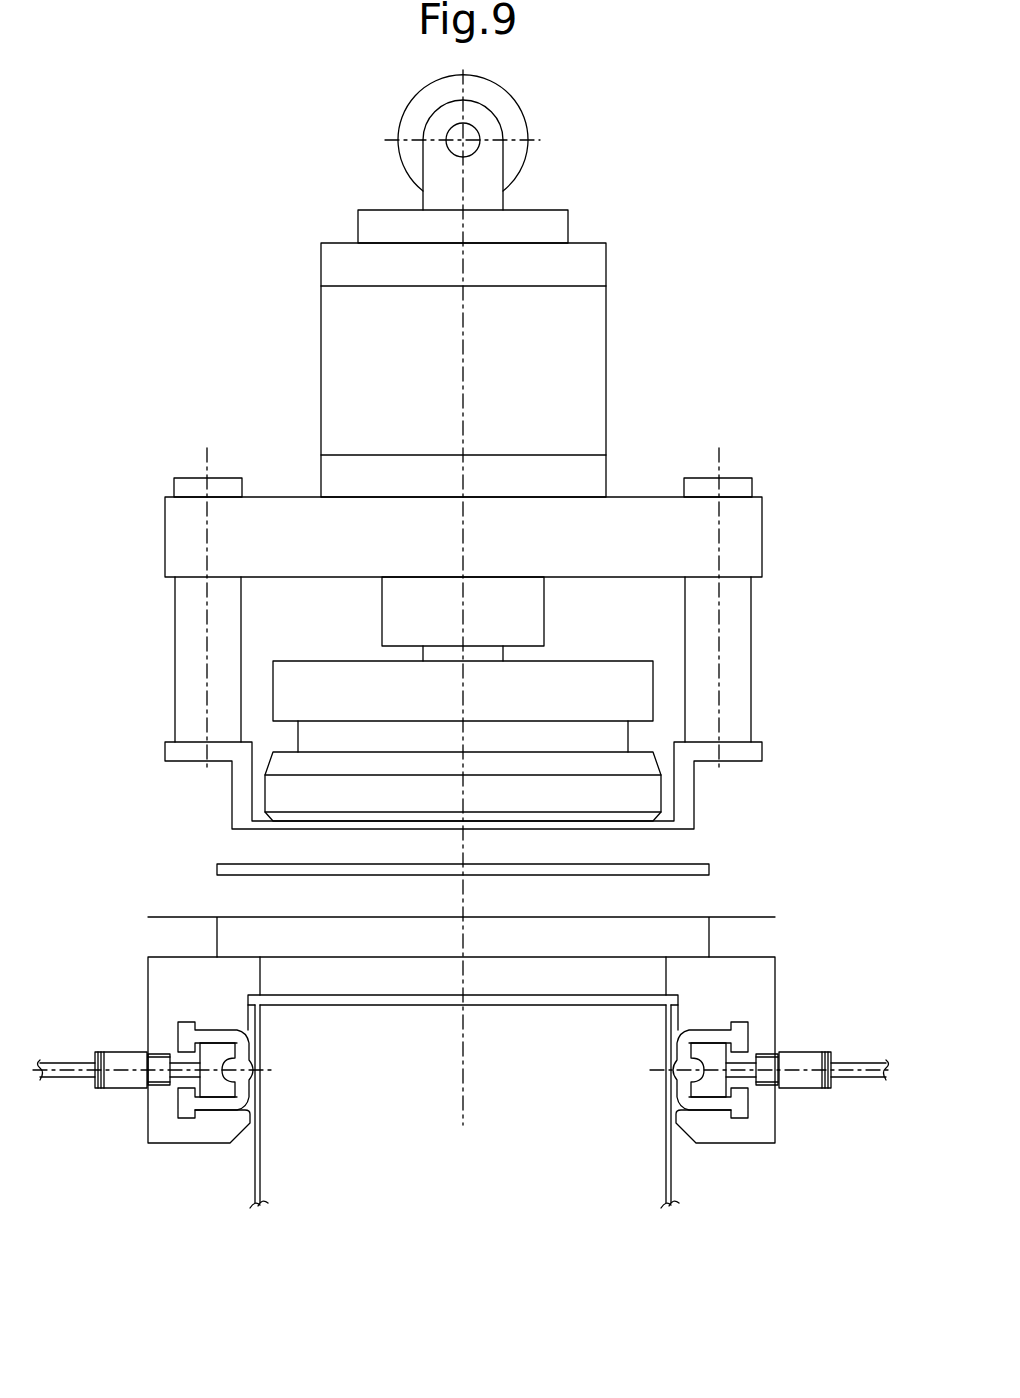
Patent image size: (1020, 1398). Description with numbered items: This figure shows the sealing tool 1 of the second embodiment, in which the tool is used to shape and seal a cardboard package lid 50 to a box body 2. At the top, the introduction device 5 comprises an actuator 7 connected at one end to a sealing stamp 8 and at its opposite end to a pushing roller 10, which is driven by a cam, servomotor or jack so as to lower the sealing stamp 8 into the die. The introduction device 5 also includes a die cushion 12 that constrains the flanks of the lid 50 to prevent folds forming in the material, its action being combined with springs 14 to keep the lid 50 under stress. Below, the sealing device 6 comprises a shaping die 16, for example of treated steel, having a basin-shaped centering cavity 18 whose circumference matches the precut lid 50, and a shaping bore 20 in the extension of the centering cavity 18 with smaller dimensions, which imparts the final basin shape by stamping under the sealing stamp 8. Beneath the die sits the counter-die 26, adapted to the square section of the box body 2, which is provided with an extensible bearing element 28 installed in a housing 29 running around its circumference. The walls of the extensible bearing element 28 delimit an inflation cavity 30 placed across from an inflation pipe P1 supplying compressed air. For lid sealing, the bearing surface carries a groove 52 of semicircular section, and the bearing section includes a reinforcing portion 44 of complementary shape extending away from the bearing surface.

The sealing tool 1 is at (263, 151).
The pushing roller 10 is at (423, 108).
The introduction device 5 is at (679, 258).
The actuator 7 is at (345, 335).
The springs 14 is at (187, 647).
The sealing stamp 8 is at (598, 795).
The die cushion 12 is at (685, 800).
The lid 50 is at (227, 867).
The centering cavity 18 is at (700, 937).
The sealing device 6 is at (758, 902).
The shaping die 16 is at (187, 967).
The shaping bore 20 is at (665, 980).
The housing 29 is at (750, 1002).
The inflation cavity 30 is at (711, 1052).
The inflation pipe P1 is at (788, 1073).
The reinforcing portion 44 is at (221, 1071).
The groove 52 is at (259, 1072).
The box body 2 is at (255, 1158).
The extensible bearing element 28 is at (710, 1100).
The counter-die 26 is at (760, 1122).